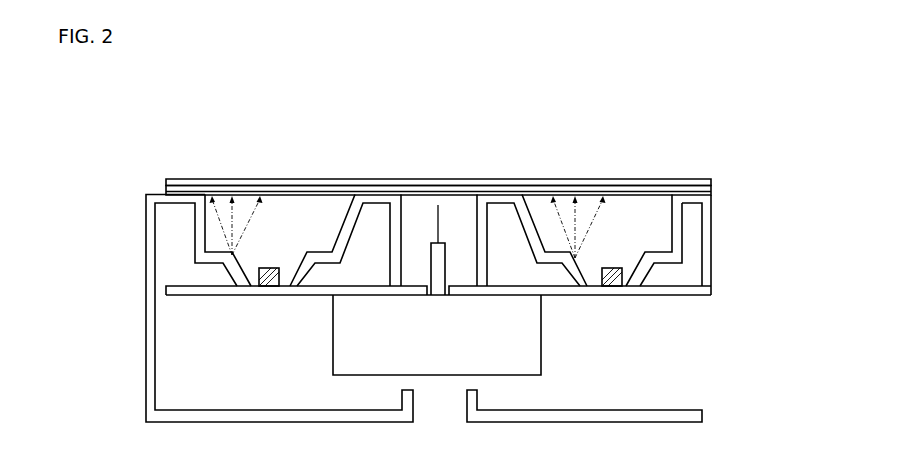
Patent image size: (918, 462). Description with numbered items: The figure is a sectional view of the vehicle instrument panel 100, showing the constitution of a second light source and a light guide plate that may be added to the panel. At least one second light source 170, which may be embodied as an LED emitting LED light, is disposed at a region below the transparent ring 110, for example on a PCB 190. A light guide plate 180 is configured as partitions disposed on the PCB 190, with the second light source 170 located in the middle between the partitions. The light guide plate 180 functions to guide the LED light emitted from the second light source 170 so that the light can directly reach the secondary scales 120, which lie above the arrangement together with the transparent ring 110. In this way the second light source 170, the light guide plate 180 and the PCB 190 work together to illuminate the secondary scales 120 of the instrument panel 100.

The vehicle instrument panel 100 is at (388, 96).
The transparent ring 110 is at (638, 192).
The secondary scale 120 is at (687, 182).
The second light source 170 is at (273, 287).
The light guide plate 180 is at (150, 208).
The PCB 190 is at (333, 290).